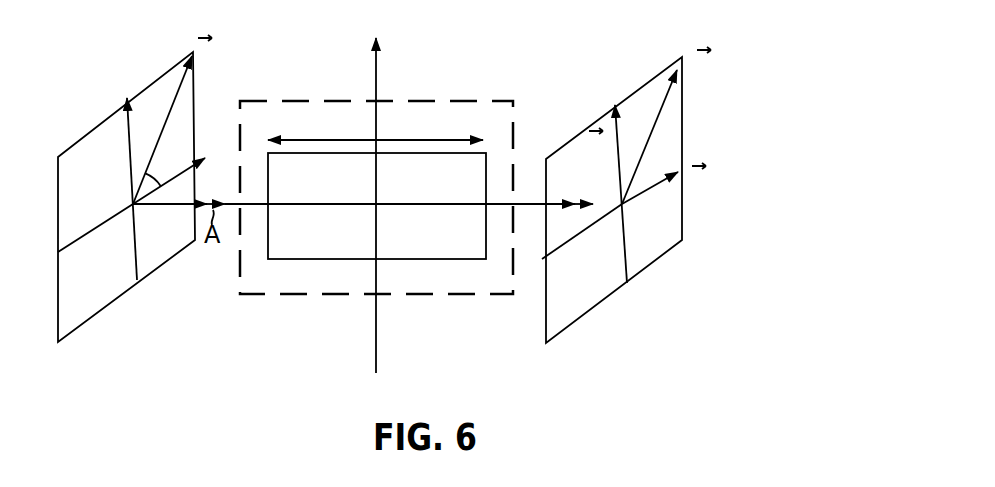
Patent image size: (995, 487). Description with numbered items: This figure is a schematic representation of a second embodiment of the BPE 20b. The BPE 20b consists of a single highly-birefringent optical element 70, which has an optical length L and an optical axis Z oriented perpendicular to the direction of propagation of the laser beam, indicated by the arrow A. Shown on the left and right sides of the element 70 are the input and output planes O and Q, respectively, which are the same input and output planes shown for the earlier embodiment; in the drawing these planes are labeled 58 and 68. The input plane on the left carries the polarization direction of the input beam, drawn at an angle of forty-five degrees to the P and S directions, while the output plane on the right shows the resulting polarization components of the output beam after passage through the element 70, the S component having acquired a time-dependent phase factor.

The input polarization plane (polarizer) 58 is at (90, 320).
The BPE 20b is at (303, 300).
The highly-birefringent optical element 70 is at (465, 262).
The output polarization plane (analyzer) 68 is at (588, 317).